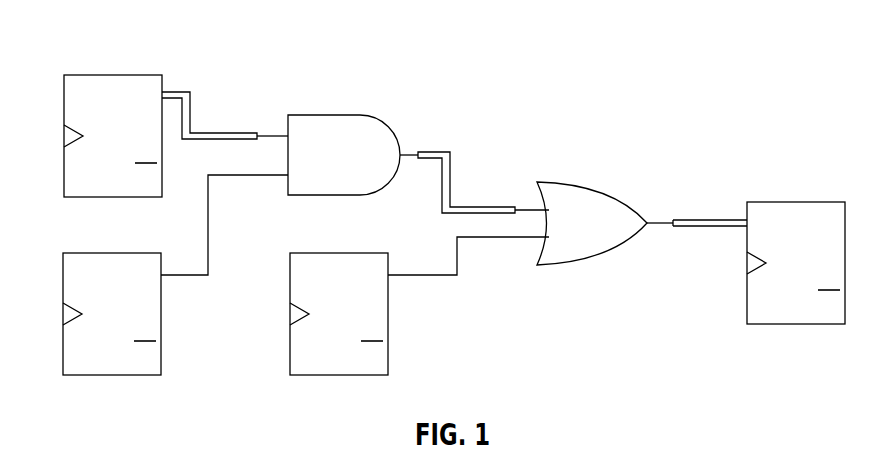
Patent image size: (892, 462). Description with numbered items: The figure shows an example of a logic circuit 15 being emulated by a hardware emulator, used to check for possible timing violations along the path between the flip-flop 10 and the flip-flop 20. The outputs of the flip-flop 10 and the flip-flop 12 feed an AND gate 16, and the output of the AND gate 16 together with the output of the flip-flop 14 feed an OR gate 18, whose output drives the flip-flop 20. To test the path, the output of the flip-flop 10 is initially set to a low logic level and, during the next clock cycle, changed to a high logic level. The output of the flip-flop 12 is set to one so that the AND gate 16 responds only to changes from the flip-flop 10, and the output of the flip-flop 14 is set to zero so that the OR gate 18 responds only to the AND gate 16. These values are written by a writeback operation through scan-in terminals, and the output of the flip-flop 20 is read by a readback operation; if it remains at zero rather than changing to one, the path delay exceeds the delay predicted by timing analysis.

The flip-flop 10 is at (93, 75).
The flip-flop 12 is at (63, 272).
The flip-flop 14 is at (290, 330).
The logic circuit 15 is at (424, 31).
The AND gate 16 is at (357, 114).
The OR gate 18 is at (588, 182).
The flip-flop 20 is at (795, 202).